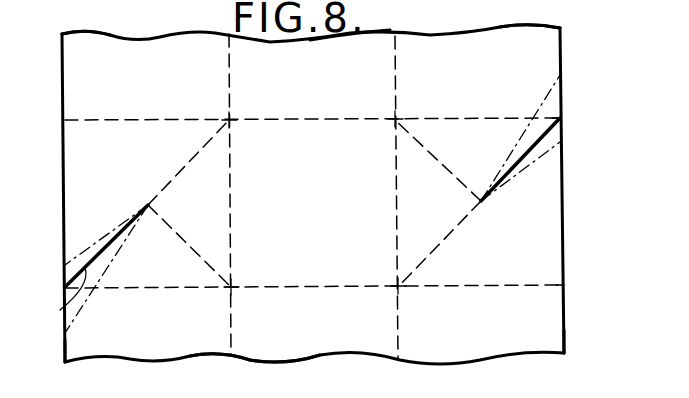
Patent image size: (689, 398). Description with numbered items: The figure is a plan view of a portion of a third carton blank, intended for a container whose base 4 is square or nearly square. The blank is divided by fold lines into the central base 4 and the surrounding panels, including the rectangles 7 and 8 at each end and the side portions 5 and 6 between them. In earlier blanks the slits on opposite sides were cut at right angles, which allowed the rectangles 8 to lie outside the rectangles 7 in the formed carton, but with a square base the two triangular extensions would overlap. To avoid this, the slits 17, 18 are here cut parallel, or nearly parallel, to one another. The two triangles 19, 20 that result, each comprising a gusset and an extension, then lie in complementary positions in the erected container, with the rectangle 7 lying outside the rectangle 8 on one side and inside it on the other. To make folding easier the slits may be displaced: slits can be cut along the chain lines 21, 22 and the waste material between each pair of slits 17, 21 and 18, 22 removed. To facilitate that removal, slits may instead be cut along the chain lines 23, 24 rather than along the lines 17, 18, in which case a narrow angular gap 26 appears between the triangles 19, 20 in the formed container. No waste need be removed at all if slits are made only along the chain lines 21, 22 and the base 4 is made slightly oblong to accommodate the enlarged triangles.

The base 4 is at (328, 228).
The side wall panel 5 is at (300, 343).
The side wall panel 6 is at (356, 68).
The rectangle 7 is at (53, 371).
The rectangle 8 is at (88, 88).
The slit 17 is at (60, 310).
The slit 18 is at (547, 133).
The triangle 19 is at (95, 142).
The triangle 20 is at (527, 246).
The chain line 21 is at (82, 308).
The chain line 22 is at (539, 107).
The chain line 23 is at (105, 233).
The chain line 24 is at (536, 160).
The narrow angular gap 26 is at (230, 397).